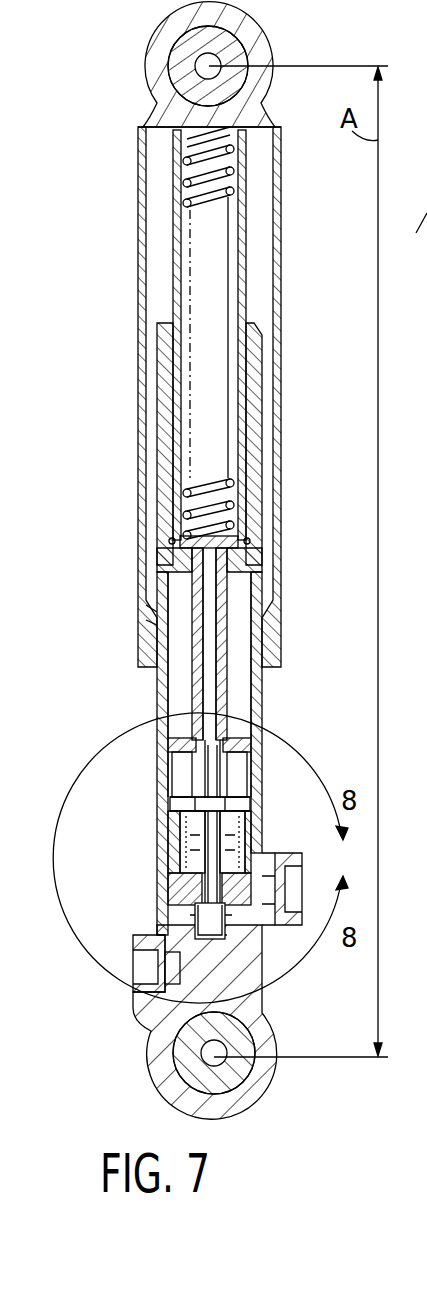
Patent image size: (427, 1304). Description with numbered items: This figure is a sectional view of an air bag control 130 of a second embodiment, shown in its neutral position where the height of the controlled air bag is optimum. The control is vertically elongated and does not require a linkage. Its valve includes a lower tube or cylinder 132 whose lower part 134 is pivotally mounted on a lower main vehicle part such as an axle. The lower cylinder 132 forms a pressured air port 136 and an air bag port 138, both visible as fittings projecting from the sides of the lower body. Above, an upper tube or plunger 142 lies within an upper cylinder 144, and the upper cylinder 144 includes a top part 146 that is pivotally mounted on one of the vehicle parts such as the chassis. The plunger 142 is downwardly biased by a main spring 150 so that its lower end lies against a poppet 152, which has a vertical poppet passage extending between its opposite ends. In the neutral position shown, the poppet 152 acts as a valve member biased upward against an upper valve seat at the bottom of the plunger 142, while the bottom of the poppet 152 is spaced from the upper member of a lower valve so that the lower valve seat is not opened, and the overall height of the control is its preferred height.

The air bag control 130 is at (203, 561).
The lower tube or cylinder 132 is at (157, 707).
The lower part 134 is at (160, 1096).
The pressured air port 136 is at (143, 966).
The air bag port 138 is at (310, 849).
The upper tube or plunger 142 is at (230, 688).
The upper cylinder 144 is at (243, 284).
The top part 146 is at (262, 103).
The main spring 150 is at (203, 192).
The poppet 152 is at (240, 812).